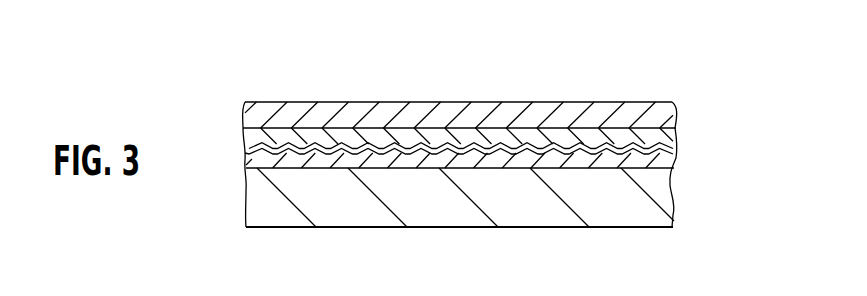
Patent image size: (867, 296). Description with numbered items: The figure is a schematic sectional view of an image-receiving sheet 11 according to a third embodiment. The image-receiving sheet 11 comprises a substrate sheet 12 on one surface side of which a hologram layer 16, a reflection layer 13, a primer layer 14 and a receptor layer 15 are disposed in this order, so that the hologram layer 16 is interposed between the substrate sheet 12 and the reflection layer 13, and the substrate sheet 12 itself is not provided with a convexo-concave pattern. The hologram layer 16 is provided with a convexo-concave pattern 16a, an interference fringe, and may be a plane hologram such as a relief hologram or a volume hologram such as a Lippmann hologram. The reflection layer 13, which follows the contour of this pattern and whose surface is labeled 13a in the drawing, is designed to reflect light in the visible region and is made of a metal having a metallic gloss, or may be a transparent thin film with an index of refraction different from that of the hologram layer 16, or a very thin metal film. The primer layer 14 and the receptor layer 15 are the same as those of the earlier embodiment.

The image-receiving sheet 11 is at (642, 90).
The substrate sheet 12 is at (273, 213).
The reflection layer 13 is at (669, 155).
The surface of corrugated layer 13a is at (300, 148).
The primer layer 14 is at (670, 137).
The receptor layer 15 is at (242, 113).
The hologram layer 16 is at (668, 162).
The convexo-concave pattern 16a is at (274, 158).